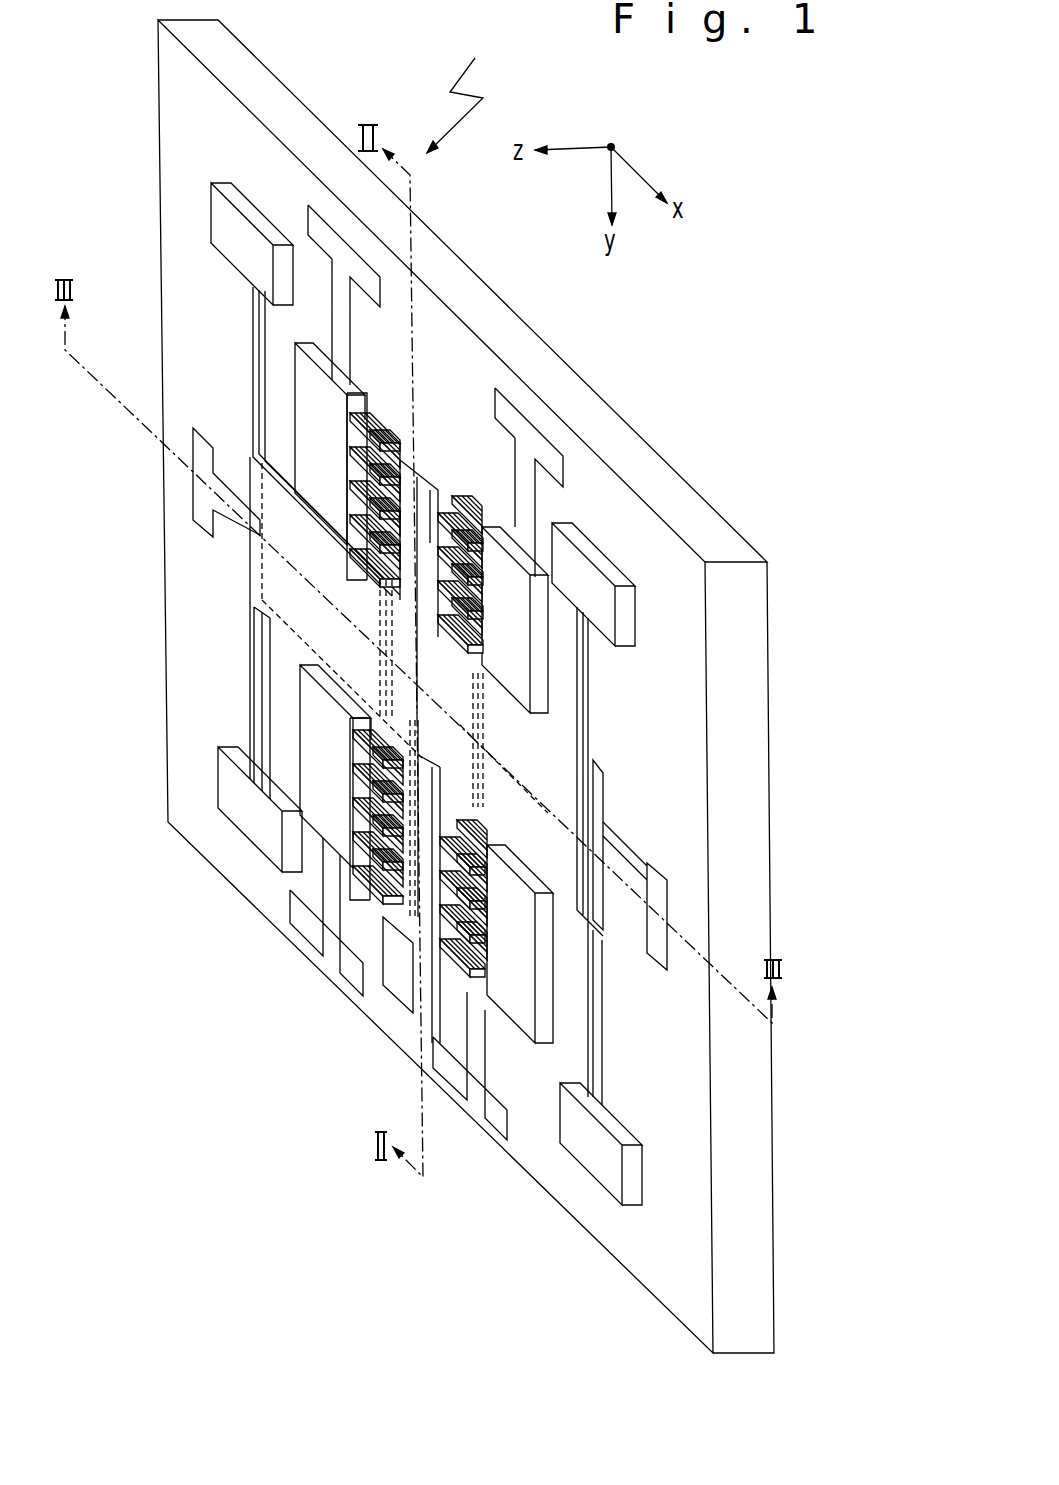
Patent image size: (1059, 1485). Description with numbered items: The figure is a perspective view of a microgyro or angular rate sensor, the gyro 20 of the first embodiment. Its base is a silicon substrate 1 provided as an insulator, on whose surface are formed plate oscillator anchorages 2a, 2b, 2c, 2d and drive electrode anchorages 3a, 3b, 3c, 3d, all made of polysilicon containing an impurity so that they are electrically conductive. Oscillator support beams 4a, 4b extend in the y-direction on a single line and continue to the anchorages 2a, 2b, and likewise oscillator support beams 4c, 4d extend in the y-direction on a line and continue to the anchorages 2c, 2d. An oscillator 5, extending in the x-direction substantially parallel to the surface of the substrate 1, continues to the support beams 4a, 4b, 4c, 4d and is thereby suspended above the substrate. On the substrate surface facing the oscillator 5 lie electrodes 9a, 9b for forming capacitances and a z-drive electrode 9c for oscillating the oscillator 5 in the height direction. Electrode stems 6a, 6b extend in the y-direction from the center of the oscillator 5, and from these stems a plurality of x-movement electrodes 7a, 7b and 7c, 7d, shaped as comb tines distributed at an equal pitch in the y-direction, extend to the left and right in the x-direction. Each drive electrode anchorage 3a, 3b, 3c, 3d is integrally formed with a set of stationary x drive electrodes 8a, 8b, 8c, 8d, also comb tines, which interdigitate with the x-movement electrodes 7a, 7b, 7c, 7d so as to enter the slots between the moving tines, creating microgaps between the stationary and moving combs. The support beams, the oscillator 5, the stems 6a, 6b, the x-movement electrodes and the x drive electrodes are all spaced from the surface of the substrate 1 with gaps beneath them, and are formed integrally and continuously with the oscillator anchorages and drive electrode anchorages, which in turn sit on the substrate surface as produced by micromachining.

The silicon substrate 1 is at (252, 85).
The gyro 20 is at (504, 49).
The plate oscillator anchorage 2a is at (246, 253).
The plate oscillator anchorage 2b is at (260, 783).
The plate oscillator anchorage 2c is at (622, 613).
The plate oscillator anchorage 2d is at (632, 1185).
The drive electrode anchorage 3a is at (312, 352).
The drive electrode anchorage 3b is at (323, 803).
The drive electrode anchorage 3c is at (512, 552).
The drive electrode anchorage 3d is at (530, 1007).
The oscillator support beam 4a is at (245, 333).
The oscillator support beam 4b is at (252, 680).
The oscillator support beam 4c is at (583, 693).
The oscillator support beam 4d is at (595, 1050).
The oscillator 5 is at (302, 587).
The electrode stem 6a is at (388, 467).
The electrode stem 6b is at (420, 925).
The x-movement electrode 7a is at (390, 462).
The x-movement electrode 7b is at (390, 893).
The x-movement electrode 7c is at (442, 515).
The x-movement electrode 7d is at (458, 962).
The x drive electrode 8a is at (374, 438).
The x drive electrode 8b is at (373, 853).
The x drive electrode 8c is at (463, 525).
The x drive electrode 8d is at (483, 963).
The electrode 9a is at (300, 535).
The electrode 9b is at (548, 778).
The z-drive electrode 9c is at (455, 748).